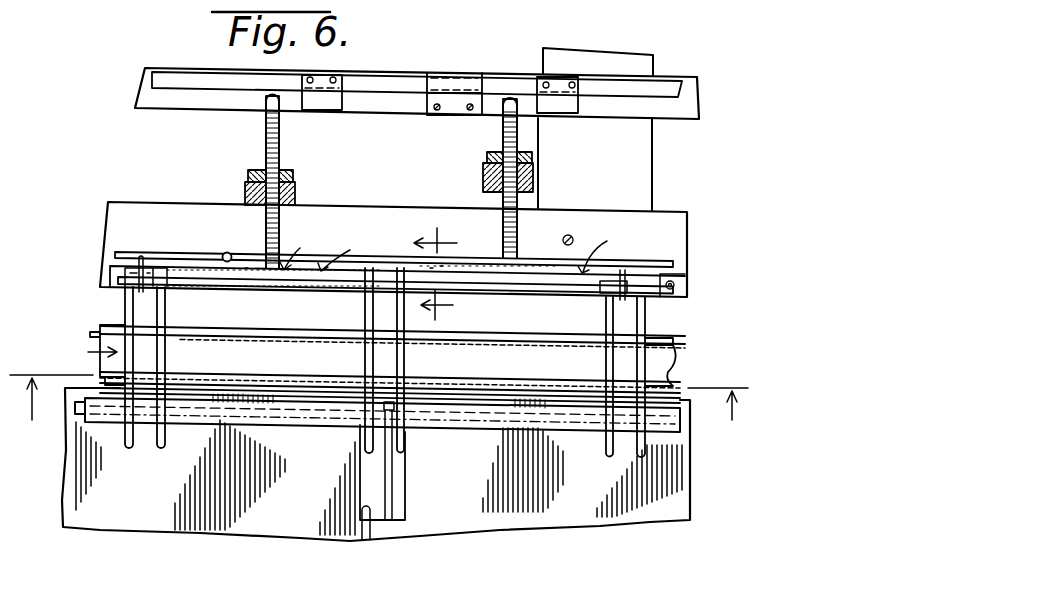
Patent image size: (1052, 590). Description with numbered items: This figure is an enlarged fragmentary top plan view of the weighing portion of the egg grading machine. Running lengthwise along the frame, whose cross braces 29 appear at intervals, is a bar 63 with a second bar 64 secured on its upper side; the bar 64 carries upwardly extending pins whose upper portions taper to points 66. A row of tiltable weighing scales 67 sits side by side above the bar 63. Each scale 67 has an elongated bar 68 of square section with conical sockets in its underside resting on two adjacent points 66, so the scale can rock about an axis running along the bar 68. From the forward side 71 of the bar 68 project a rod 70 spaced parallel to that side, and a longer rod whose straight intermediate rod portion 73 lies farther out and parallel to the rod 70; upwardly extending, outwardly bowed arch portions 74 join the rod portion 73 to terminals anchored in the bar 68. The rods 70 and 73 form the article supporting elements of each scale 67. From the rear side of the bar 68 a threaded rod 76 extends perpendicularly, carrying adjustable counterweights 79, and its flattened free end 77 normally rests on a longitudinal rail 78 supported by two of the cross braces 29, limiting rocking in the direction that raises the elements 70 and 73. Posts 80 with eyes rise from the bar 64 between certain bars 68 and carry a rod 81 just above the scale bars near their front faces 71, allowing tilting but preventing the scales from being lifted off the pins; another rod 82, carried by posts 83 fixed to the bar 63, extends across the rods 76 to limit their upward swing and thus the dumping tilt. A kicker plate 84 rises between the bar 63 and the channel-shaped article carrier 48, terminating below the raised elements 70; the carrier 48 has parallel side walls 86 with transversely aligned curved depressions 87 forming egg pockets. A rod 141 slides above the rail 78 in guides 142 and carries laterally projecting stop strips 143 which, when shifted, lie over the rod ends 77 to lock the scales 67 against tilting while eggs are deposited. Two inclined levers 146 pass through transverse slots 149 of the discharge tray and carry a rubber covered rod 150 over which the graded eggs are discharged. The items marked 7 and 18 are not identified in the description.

The section line 7- 7 is at (379, 411).
The direction arrow 18 is at (445, 263).
The cross braces 29 is at (648, 166).
The article carrier 48 is at (86, 355).
The bar 63 is at (372, 213).
The bar 64 is at (153, 262).
The point 66 is at (580, 290).
The weighing scale 67 is at (476, 251).
The elongated bar 68 is at (302, 248).
The rod 70 is at (265, 332).
The forward side 71 is at (528, 287).
The rod portion 73 is at (258, 390).
The arch portions 74 is at (175, 345).
The threaded rod 76 is at (280, 156).
The flattened free end 77 is at (266, 106).
The rail 78 is at (185, 104).
The counterweights 79 is at (296, 186).
The posts 80 is at (147, 286).
The rod 81 is at (247, 286).
The rod 82 is at (131, 252).
The posts 83 is at (228, 252).
The kicker plate 84 is at (100, 330).
The side walls 86 is at (670, 364).
The depressions 87 is at (488, 388).
The rod 141 is at (385, 82).
The guides 142 is at (463, 73).
The strips 143 is at (332, 104).
The levers 146 is at (393, 497).
The transverse slots 149 is at (367, 515).
The rubber covered rod 150 is at (463, 421).